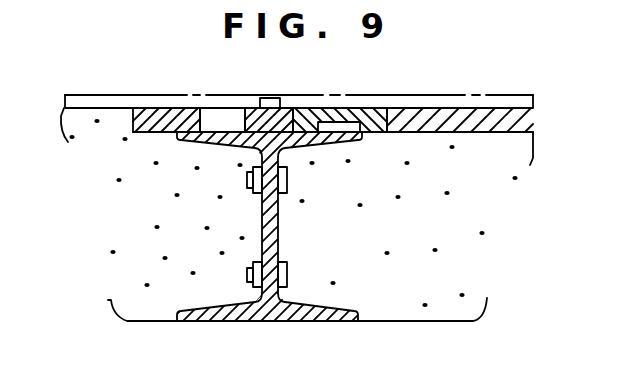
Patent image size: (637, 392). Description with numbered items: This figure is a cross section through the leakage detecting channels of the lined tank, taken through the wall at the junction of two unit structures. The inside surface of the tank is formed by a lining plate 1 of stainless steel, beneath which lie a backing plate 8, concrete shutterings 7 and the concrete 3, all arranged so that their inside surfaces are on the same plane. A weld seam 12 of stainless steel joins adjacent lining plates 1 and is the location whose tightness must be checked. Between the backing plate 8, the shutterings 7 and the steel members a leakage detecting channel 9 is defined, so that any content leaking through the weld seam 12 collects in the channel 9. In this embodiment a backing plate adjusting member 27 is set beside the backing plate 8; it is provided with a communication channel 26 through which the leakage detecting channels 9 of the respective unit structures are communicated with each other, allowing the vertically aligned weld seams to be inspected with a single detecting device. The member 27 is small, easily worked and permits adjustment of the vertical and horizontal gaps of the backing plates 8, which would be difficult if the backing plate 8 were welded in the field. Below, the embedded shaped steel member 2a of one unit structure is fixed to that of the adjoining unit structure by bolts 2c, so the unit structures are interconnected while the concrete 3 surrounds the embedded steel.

The lining plate 1 is at (517, 104).
The concrete 3 is at (140, 208).
The concrete shuttering 7 is at (160, 112).
The backing plate 8 is at (284, 120).
The leakage detecting channel 9 is at (222, 118).
The weld seam 12 is at (270, 100).
The communication channel 26 is at (343, 125).
The backing plate adjusting member 27 is at (377, 117).
The embedded shaped steel member 2a is at (292, 322).
The bolt 2c is at (281, 262).